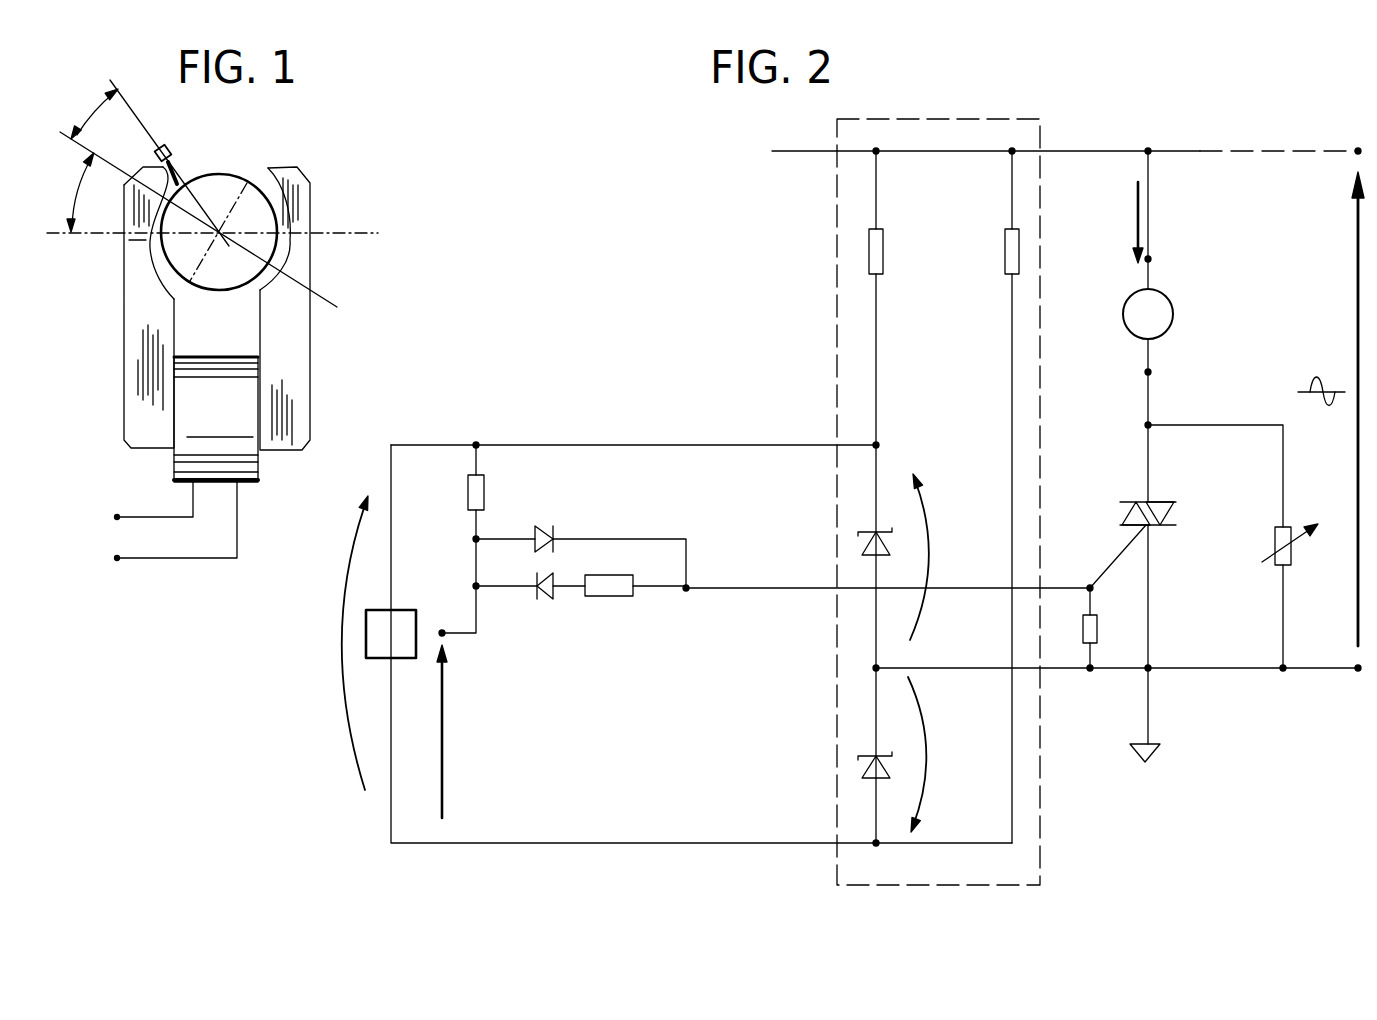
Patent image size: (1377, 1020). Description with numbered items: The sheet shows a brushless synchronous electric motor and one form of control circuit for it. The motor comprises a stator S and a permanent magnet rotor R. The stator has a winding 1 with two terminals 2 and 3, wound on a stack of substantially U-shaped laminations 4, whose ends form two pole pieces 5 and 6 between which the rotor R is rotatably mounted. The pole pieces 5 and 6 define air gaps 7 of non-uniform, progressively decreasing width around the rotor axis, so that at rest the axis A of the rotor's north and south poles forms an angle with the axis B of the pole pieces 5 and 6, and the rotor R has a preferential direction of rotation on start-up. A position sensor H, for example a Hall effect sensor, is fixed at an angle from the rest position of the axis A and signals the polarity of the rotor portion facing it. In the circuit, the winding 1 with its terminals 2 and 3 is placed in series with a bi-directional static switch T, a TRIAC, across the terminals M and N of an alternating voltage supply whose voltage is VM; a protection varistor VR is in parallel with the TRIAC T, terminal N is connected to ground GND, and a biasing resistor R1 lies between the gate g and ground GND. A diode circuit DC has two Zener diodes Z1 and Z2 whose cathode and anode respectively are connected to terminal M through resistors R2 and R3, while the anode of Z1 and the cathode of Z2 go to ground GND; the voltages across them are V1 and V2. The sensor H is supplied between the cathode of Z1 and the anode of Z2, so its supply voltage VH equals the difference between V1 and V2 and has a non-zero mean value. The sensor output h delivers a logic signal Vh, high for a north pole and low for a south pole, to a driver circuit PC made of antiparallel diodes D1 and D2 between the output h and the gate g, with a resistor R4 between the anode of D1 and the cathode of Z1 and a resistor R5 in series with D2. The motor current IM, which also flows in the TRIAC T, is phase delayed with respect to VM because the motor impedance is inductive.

In FIG. 1, the winding 1 is at (242, 413).
In FIG. 2, the winding 1 is at (1160, 309).
In FIG. 1, the terminal 2 is at (117, 517).
In FIG. 2, the terminal 2 is at (1152, 258).
In FIG. 1, the terminal 3 is at (117, 558).
In FIG. 2, the terminal 3 is at (1155, 372).
In FIG. 1, the stack of substantially U-shape laminations 4 is at (147, 367).
In FIG. 1, the pole piece 5 is at (137, 240).
In FIG. 1, the pole piece 6 is at (300, 193).
In FIG. 1, the air gaps 7 is at (292, 248).
In FIG. 1, the position sensor H is at (172, 153).
In FIG. 2, the position sensor H is at (402, 619).
In FIG. 1, the rotor R is at (240, 158).
In FIG. 1, the stator S is at (243, 308).
In FIG. 1, the axis of the north and south poles A is at (327, 303).
In FIG. 1, the axis of the pole pieces B is at (58, 236).
In FIG. 2, the terminal M is at (1358, 147).
In FIG. 2, the terminal N is at (1357, 671).
In FIG. 2, the diode circuit DC is at (977, 118).
In FIG. 2, the driver circuit PC is at (588, 529).
In FIG. 2, the biasing resistor R1 is at (1084, 645).
In FIG. 2, the resistor R2 is at (884, 256).
In FIG. 2, the resistor R3 is at (1006, 257).
In FIG. 2, the resistor R4 is at (469, 500).
In FIG. 2, the resistor R5 is at (623, 584).
In FIG. 2, the diode D1 is at (544, 526).
In FIG. 2, the diode D2 is at (546, 598).
In FIG. 2, the Zener diode Z1 is at (884, 555).
In FIG. 2, the Zener diode Z2 is at (878, 783).
In FIG. 2, the bi-directional static switch T is at (1163, 503).
In FIG. 2, the gate g is at (1105, 562).
In FIG. 2, the protection varistor VR is at (1274, 541).
In FIG. 2, the ground GND is at (1146, 762).
In FIG. 2, the voltage V1 is at (932, 532).
In FIG. 2, the voltage V2 is at (930, 741).
In FIG. 2, the voltage between the supply terminals of the sensor VH is at (342, 625).
In FIG. 2, the voltage Vh is at (445, 721).
In FIG. 2, the current IM is at (1135, 224).
In FIG. 2, the alternating voltage VM is at (1357, 318).
In FIG. 2, the output h is at (442, 630).